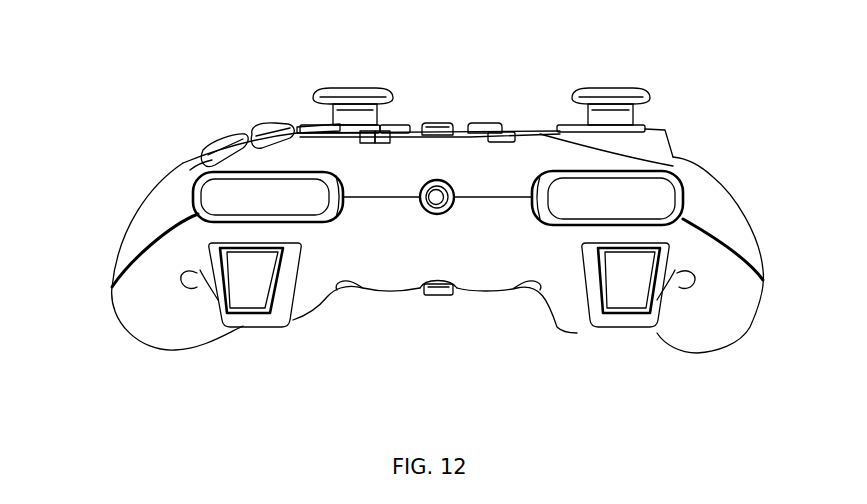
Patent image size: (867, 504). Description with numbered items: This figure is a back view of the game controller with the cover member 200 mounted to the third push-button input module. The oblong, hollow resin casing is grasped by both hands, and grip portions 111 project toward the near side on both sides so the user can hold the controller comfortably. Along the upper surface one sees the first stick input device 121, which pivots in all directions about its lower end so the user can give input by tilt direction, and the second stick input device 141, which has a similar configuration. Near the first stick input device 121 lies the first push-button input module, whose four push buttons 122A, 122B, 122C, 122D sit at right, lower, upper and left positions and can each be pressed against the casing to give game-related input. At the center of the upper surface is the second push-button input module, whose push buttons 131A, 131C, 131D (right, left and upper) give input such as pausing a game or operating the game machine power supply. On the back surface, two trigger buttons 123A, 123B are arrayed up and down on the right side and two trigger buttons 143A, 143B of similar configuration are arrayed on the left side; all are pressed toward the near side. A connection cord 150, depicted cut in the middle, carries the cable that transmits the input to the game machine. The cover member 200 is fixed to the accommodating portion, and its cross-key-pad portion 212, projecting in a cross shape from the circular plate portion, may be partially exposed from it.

The grip portion 111 is at (148, 335).
The first stick input device 121 is at (343, 98).
The push button 122A is at (220, 142).
The push button 122B is at (267, 127).
The push button 122C is at (203, 165).
The push button 122D is at (303, 122).
The trigger button 123A is at (210, 200).
The trigger button 123B is at (243, 305).
The push button 131A is at (398, 125).
The push button 131C is at (487, 123).
The push button 131D is at (447, 123).
The second stick input device 141 is at (617, 97).
The trigger button 143A is at (667, 200).
The trigger button 143B is at (650, 267).
The connection cord 150 is at (442, 208).
The cover member 200 is at (430, 312).
The cross-key-pad portion 212 is at (440, 296).